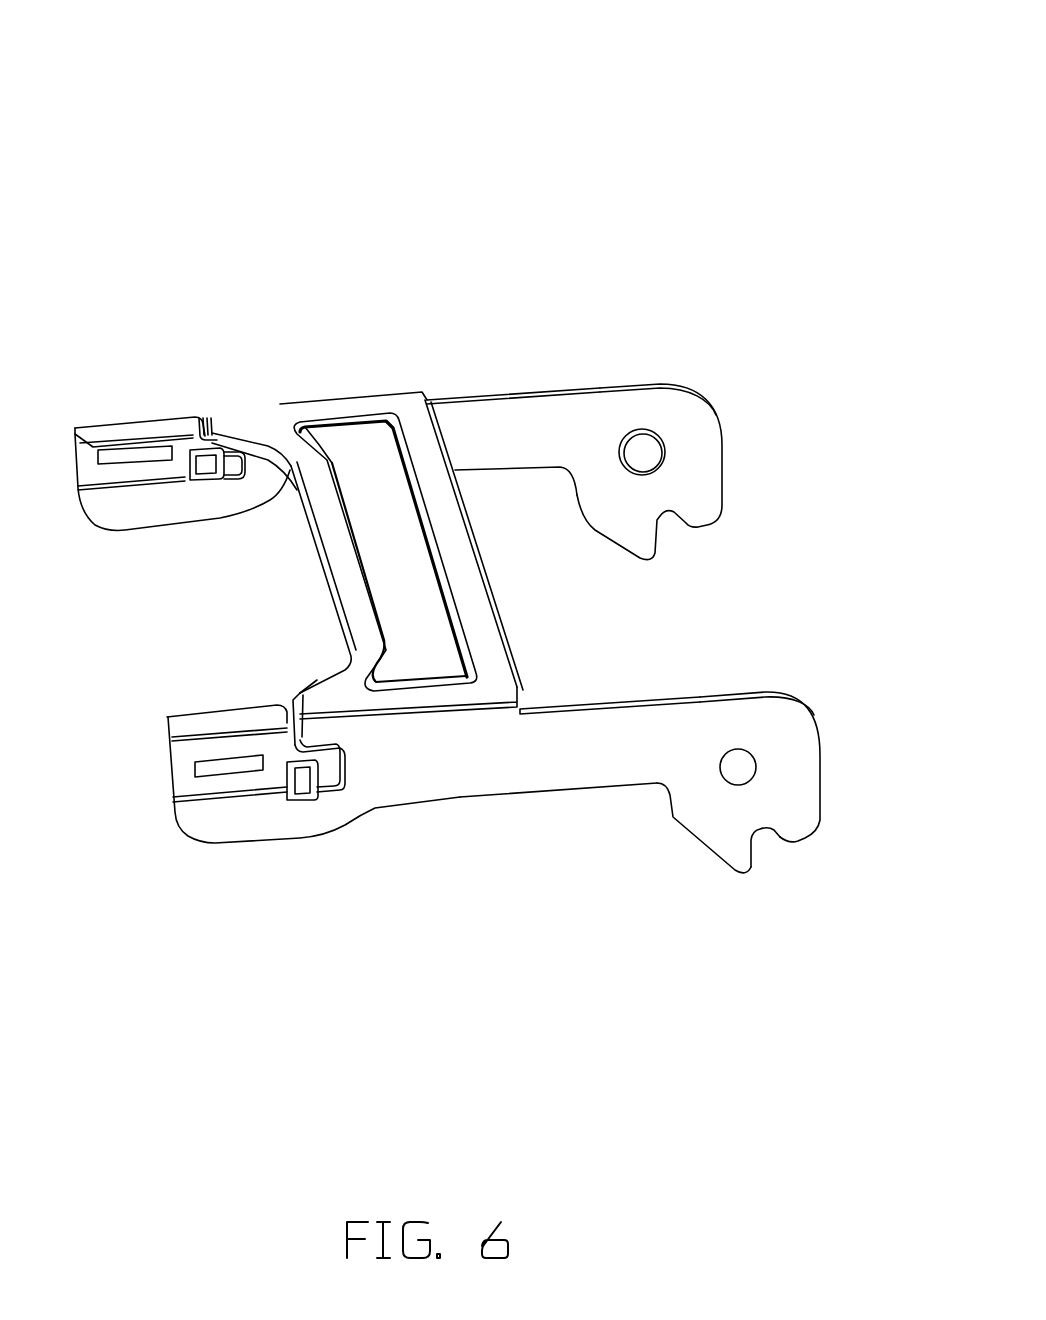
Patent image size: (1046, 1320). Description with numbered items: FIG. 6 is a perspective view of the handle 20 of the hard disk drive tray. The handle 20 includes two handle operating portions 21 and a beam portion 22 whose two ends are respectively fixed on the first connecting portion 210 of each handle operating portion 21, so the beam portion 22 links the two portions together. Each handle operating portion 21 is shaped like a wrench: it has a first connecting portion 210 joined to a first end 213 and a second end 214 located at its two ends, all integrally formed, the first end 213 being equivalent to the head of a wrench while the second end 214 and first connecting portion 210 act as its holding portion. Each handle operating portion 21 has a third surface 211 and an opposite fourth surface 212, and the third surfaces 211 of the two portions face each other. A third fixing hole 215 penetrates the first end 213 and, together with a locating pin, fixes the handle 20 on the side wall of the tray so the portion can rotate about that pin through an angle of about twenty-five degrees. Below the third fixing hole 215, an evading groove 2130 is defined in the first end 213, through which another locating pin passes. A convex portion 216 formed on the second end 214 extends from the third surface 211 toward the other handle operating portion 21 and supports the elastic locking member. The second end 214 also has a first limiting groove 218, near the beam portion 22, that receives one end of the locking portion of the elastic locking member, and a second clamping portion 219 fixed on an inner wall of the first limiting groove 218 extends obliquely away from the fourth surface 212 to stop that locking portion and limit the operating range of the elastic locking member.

The handle 20 is at (401, 376).
The handle operating portion 21 is at (439, 667).
The beam portion 22 is at (429, 552).
The first connecting portion 210 is at (579, 818).
The third surface 211 is at (706, 472).
The fourth surface 212 is at (814, 767).
The first end 213 is at (655, 856).
The evading groove 2130 is at (828, 864).
The second end 214 is at (314, 843).
The third fixing hole 215 is at (663, 374).
The convex portion 216 is at (182, 547).
The first limiting groove 218 is at (217, 522).
The second clamping portion 219 is at (303, 641).